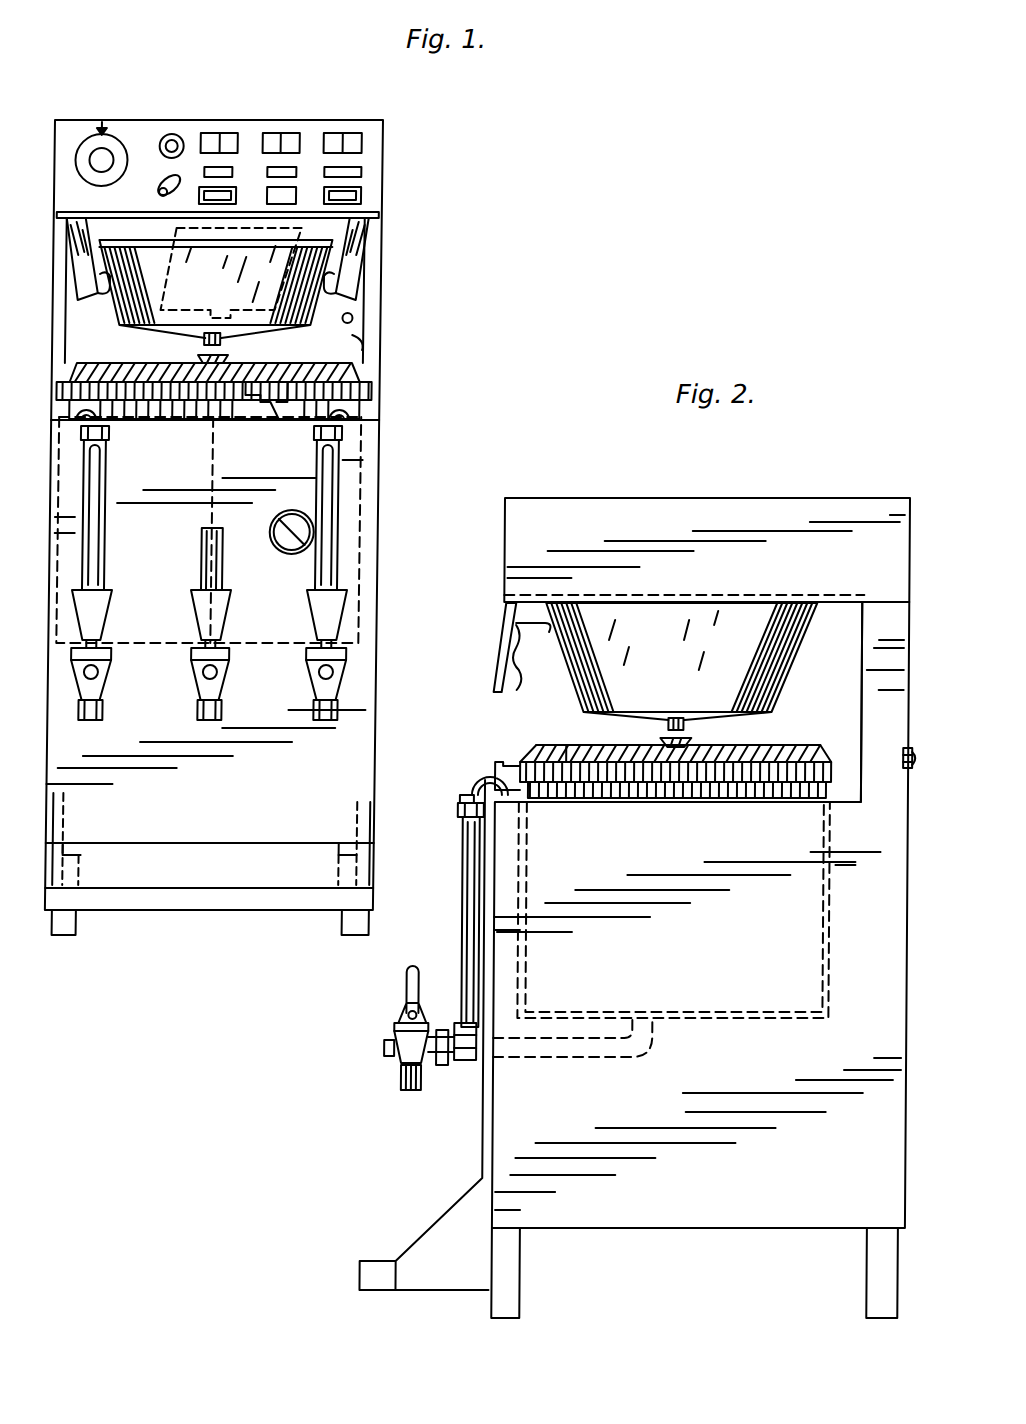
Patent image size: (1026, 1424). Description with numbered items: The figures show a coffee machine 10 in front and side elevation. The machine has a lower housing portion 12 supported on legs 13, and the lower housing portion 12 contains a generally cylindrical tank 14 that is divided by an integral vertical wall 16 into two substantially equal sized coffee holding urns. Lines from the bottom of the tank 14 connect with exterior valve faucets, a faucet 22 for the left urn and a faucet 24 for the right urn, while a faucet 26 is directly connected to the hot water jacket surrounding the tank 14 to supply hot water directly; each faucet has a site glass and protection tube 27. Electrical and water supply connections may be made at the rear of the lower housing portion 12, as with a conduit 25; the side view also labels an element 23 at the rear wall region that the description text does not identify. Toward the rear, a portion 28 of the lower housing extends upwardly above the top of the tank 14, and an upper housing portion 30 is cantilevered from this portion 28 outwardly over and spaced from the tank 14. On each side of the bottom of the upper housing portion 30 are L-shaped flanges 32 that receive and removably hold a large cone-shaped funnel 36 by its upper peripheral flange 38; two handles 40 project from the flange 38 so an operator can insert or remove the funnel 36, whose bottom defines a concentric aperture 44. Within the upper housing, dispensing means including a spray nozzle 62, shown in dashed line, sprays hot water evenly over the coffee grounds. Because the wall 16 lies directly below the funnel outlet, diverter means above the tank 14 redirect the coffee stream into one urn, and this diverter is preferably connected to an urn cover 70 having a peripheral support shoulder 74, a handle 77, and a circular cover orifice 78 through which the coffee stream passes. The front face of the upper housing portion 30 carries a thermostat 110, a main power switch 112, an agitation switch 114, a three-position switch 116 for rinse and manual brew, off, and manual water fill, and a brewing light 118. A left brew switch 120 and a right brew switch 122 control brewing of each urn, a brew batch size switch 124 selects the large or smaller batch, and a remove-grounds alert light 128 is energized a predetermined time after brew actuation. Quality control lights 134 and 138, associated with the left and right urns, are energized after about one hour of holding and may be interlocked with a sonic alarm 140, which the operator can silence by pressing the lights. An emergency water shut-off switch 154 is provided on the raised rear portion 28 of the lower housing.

In FIG. 1, the coffee machine 10 is at (404, 112).
In FIG. 2, the coffee machine 10 is at (820, 473).
In FIG. 2, the lower housing portion 12 is at (718, 1166).
In FIG. 1, the legs 13 is at (74, 928).
In FIG. 2, the legs 13 is at (525, 1280).
In FIG. 1, the tank 14 is at (368, 516).
In FIG. 2, the tank 14 is at (707, 1018).
In FIG. 1, the wall 16 is at (222, 434).
In FIG. 1, the faucet 22 is at (106, 696).
In FIG. 2, the partition wall 23 is at (872, 668).
In FIG. 1, the faucet 24 is at (326, 696).
In FIG. 2, the faucet 24 is at (410, 1045).
In FIG. 2, the conduit 25 is at (908, 768).
In FIG. 1, the faucet 26 is at (212, 680).
In FIG. 1, the site glass and protection tube 27 is at (100, 522).
In FIG. 1, the portion of the lower housing 28 is at (367, 345).
In FIG. 2, the upper housing portion 30 is at (657, 512).
In FIG. 1, the L-shaped flanges 32 is at (64, 226).
In FIG. 1, the funnel 36 is at (120, 298).
In FIG. 2, the funnel 36 is at (585, 678).
In FIG. 1, the upper peripheral flange 38 is at (85, 212).
In FIG. 1, the handles 40 is at (100, 284).
In FIG. 2, the handles 40 is at (497, 667).
In FIG. 1, the aperture 44 is at (207, 339).
In FIG. 2, the aperture 44 is at (706, 718).
In FIG. 1, the spray nozzle 62 is at (230, 273).
In FIG. 1, the urn cover 70 is at (378, 380).
In FIG. 2, the urn cover 70 is at (812, 755).
In FIG. 2, the peripheral support shoulder or flange 74 is at (538, 752).
In FIG. 1, the handle 77 is at (284, 400).
In FIG. 2, the handle 77 is at (497, 770).
In FIG. 2, the cover orifice 78 is at (668, 738).
In FIG. 1, the thermostat 110 is at (92, 150).
In FIG. 1, the main power switch 112 is at (355, 196).
In FIG. 1, the agitation switch 114 is at (218, 205).
In FIG. 1, the three-position switch 116 is at (158, 188).
In FIG. 1, the brewing light 118 is at (300, 170).
In FIG. 1, the left brew switch 120 is at (231, 133).
In FIG. 1, the right brew switch 122 is at (352, 146).
In FIG. 1, the brew batch size switch 124 is at (272, 133).
In FIG. 1, the remove grounds alert first visual signal light 128 is at (283, 205).
In FIG. 1, the quality control light 134 is at (205, 170).
In FIG. 1, the quality control light 138 is at (352, 172).
In FIG. 1, the sonic alarm 140 is at (163, 138).
In FIG. 1, the emergency water shut-off switch 154 is at (356, 318).